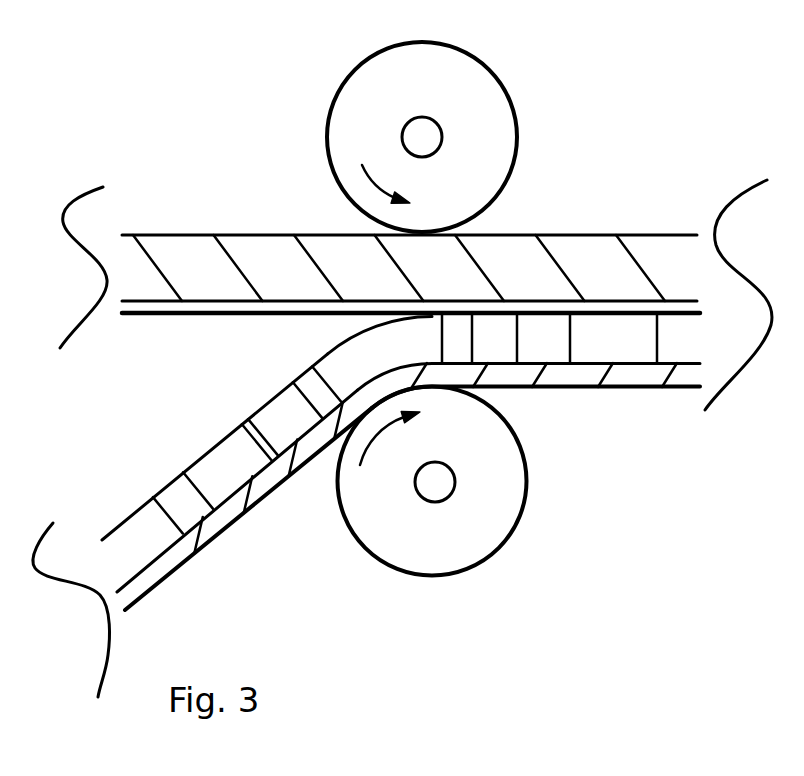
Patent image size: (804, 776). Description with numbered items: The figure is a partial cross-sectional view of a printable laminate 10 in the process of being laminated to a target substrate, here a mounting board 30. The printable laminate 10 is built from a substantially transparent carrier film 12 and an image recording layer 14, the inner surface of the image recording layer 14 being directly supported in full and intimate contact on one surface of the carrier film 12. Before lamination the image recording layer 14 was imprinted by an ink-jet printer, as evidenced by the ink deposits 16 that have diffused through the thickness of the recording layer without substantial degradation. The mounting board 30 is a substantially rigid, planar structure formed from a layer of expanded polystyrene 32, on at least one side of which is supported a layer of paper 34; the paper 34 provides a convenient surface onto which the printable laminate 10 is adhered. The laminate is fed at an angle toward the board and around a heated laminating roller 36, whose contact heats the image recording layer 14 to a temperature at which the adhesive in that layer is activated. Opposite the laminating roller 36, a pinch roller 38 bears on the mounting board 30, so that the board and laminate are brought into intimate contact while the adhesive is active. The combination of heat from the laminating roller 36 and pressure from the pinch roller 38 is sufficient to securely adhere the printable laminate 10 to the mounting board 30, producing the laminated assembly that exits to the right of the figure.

The printable laminate 10 is at (215, 510).
The carrier film 12 is at (143, 602).
The image recording layer 14 is at (193, 460).
The ink deposits 16 is at (552, 353).
The mounting board 30 is at (409, 273).
The layer of expanded polystyrene 32 is at (570, 233).
The layer of paper 34 is at (247, 317).
The heated laminating roller 36 is at (528, 503).
The pinch roller 38 is at (500, 82).